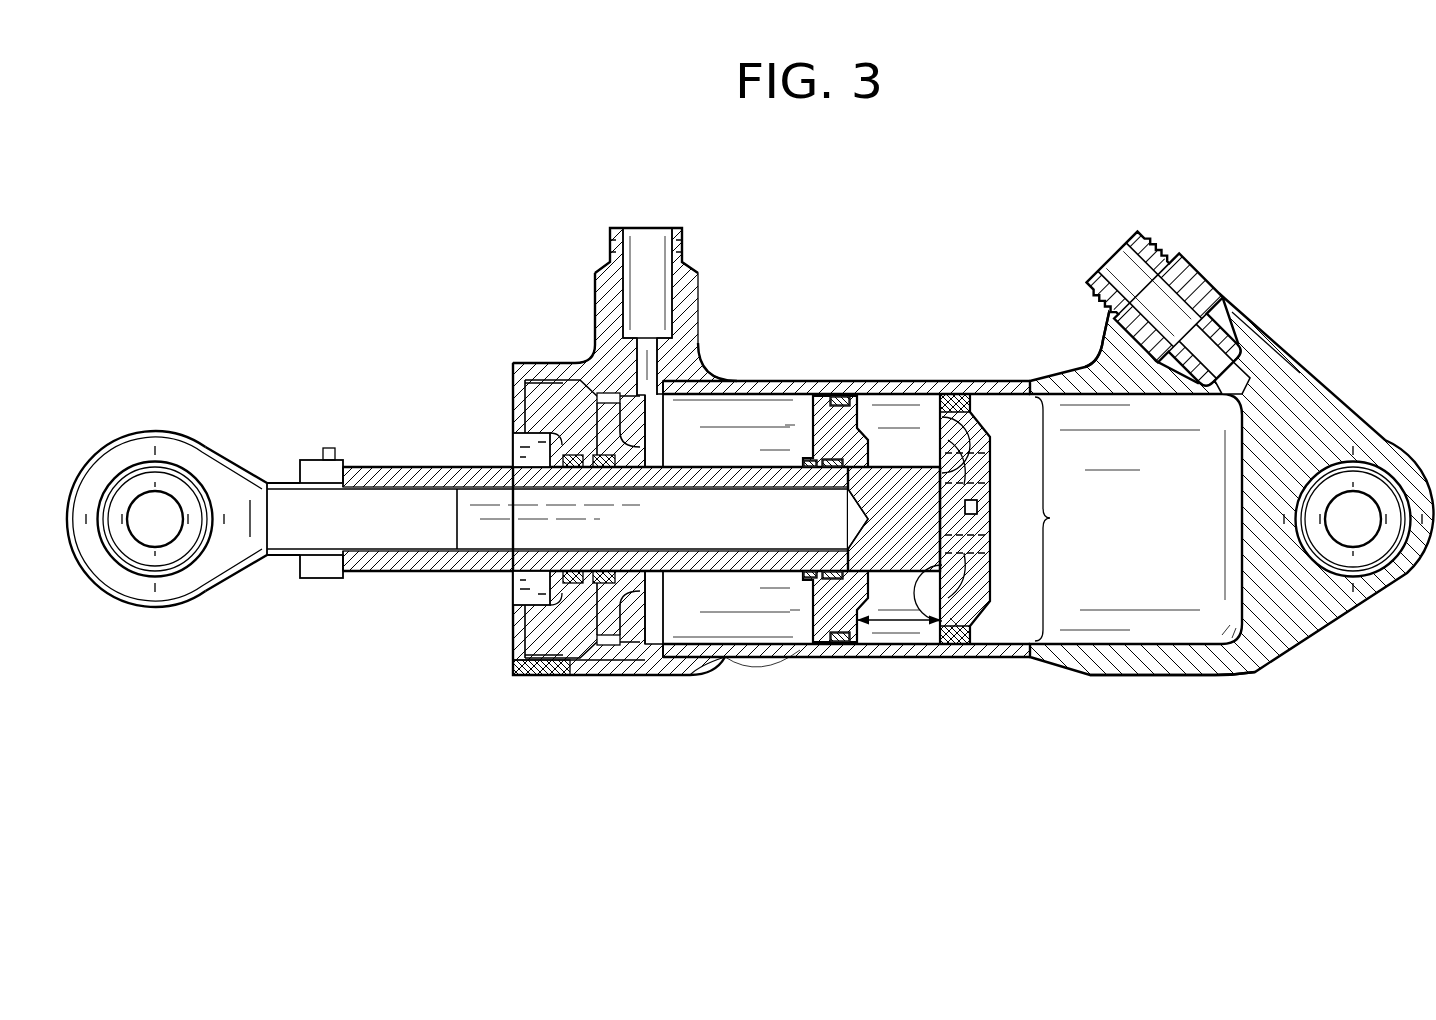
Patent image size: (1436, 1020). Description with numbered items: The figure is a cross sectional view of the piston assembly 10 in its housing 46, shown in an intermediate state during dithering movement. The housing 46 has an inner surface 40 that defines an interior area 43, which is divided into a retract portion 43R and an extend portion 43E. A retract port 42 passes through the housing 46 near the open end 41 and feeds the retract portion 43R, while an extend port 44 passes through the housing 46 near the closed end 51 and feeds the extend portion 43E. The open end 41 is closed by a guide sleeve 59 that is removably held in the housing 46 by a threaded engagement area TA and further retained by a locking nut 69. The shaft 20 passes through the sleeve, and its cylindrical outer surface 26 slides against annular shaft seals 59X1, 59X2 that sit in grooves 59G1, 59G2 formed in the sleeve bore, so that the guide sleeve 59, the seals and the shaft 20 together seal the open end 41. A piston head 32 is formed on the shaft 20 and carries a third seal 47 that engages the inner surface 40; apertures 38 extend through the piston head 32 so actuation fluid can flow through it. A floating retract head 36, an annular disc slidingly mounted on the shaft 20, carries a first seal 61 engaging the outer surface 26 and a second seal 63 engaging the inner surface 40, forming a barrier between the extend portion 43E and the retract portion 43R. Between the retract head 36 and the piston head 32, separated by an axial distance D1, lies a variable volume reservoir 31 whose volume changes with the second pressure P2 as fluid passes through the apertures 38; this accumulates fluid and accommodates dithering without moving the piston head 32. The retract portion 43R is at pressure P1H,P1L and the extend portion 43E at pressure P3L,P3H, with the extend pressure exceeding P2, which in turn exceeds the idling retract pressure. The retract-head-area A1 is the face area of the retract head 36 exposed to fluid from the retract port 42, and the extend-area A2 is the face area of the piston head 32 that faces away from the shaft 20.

The piston assembly 10 is at (405, 382).
The shaft 20 is at (447, 560).
The outer surface 26 is at (503, 573).
The threaded engagement area TA is at (523, 363).
The open end 41 is at (640, 652).
The retract port 42 is at (658, 386).
The guide sleeve 59 is at (549, 645).
The annular shaft seal 59X1 is at (597, 455).
The annular shaft seal 59X2 is at (565, 455).
The groove 59G1 is at (600, 586).
The groove 59G2 is at (578, 586).
The locking nut 69 is at (515, 661).
The variable volume reservoir 31 is at (920, 410).
The second pressure P2 is at (893, 420).
The retract portion pressures P1H,P1L is at (712, 598).
The retract-head-area A1 is at (797, 613).
The retract portion 43R is at (776, 622).
The first seal 61 is at (863, 600).
The second seal 63 is at (845, 418).
The retract head 36 is at (858, 410).
The axial distance D1 is at (890, 660).
The piston head 32 is at (956, 401).
The third seal 47 is at (960, 420).
The apertures 38 is at (970, 580).
The interior area 43 is at (1208, 498).
The extend portion 43E is at (1183, 585).
The closed end 51 is at (1243, 567).
The extend port 44 is at (1228, 452).
The inner surface 40 is at (1090, 400).
The housing 46 is at (1212, 250).
The extend portion pressures P3L,P3H is at (1168, 452).
The extend-area A2 is at (1061, 519).